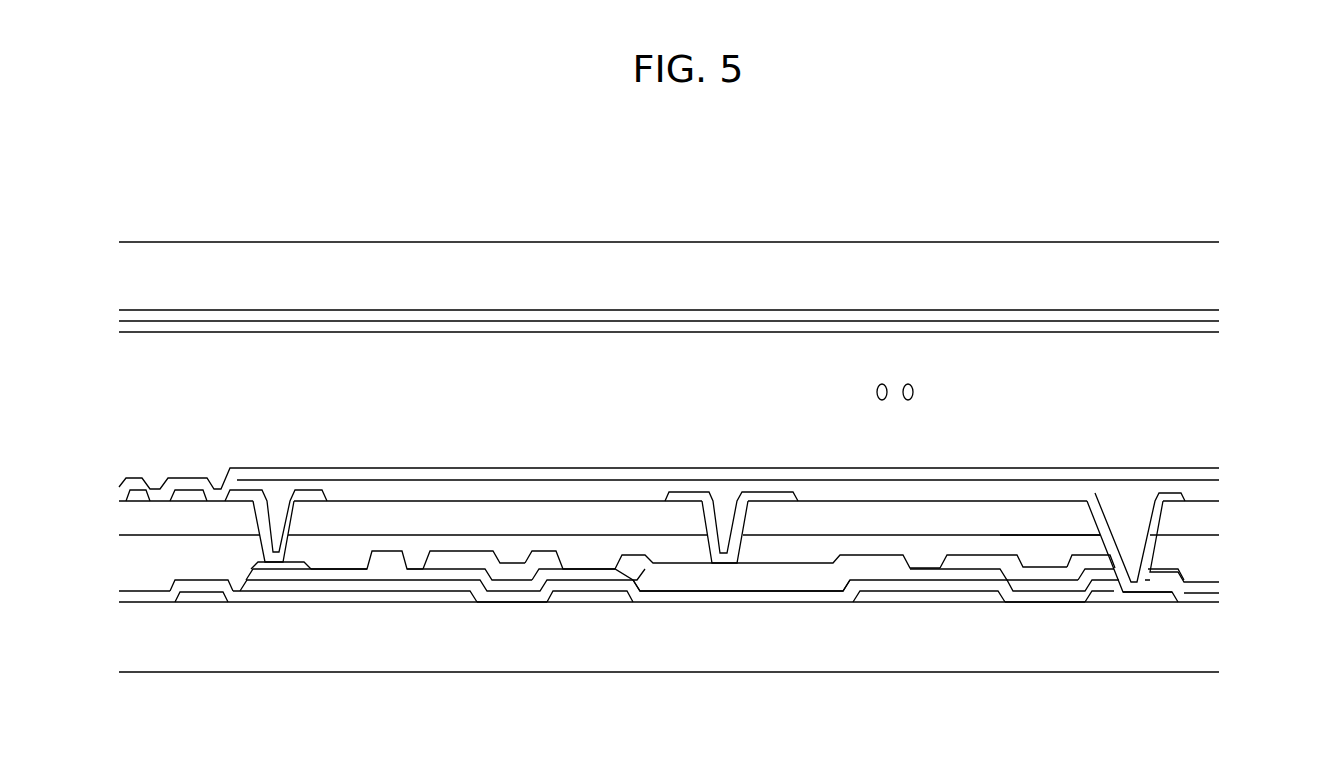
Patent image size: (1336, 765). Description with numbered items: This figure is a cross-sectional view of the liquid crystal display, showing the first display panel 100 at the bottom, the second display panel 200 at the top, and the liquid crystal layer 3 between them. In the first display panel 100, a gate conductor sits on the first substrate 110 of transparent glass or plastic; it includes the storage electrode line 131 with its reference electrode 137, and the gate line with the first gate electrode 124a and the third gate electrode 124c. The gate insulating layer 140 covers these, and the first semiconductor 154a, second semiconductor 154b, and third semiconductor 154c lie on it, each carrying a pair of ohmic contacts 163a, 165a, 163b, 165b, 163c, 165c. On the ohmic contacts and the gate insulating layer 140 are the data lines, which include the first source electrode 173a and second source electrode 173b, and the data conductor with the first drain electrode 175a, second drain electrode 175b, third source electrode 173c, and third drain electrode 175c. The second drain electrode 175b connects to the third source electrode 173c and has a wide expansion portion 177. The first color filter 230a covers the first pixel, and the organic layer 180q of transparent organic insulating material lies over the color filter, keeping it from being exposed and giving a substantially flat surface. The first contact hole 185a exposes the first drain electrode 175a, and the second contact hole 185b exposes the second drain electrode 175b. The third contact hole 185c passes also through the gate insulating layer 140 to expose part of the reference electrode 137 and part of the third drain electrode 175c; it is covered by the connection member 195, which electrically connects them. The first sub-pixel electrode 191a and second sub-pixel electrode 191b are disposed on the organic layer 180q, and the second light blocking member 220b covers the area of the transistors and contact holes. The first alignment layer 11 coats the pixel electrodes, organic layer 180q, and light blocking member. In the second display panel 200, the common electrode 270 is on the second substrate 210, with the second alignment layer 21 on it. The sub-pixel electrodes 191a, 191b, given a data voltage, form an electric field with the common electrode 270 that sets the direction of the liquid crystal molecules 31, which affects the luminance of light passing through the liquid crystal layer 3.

The second substrate 210 is at (760, 260).
The common electrode 270 is at (868, 318).
The second alignment layer 21 is at (745, 334).
The liquid crystal molecules 31 is at (913, 392).
The second display panel 200 is at (1222, 242).
The liquid crystal layer 3 is at (1222, 503).
The first display panel 100 is at (1222, 672).
The first alignment layer 11 is at (494, 464).
The second light blocking member 220b is at (583, 486).
The organic layer 180q is at (535, 513).
The first color filter 230a is at (1037, 543).
The first sub-pixel electrode 191a is at (135, 492).
The first contact hole 185a is at (266, 520).
The second sub-pixel electrode 191b is at (682, 492).
The second contact hole 185b is at (710, 527).
The connection member 195 is at (1163, 497).
The third contact hole 185c is at (1105, 523).
The first drain electrode 175a is at (282, 568).
The first source electrode 173a is at (376, 555).
The second source electrode 173b is at (398, 552).
The second drain electrode 175b is at (460, 555).
The expansion portion 177 is at (771, 568).
The third source electrode 173c is at (622, 553).
The third drain electrode 175c is at (972, 560).
The ohmic contact 163a is at (376, 570).
The ohmic contact 165a is at (262, 578).
The ohmic contact 163b is at (402, 578).
The ohmic contact 165b is at (462, 580).
The ohmic contact 163c is at (892, 563).
The ohmic contact 165c is at (985, 568).
The first semiconductor 154a is at (342, 575).
The second semiconductor 154b is at (432, 582).
The third semiconductor 154c is at (610, 577).
The storage electrode line 131 is at (203, 598).
The gate insulating layer 140 is at (750, 598).
The first gate electrode 124a is at (356, 598).
The third gate electrode 124c is at (906, 598).
The reference electrode 137 is at (1128, 598).
The first substrate 110 is at (830, 650).